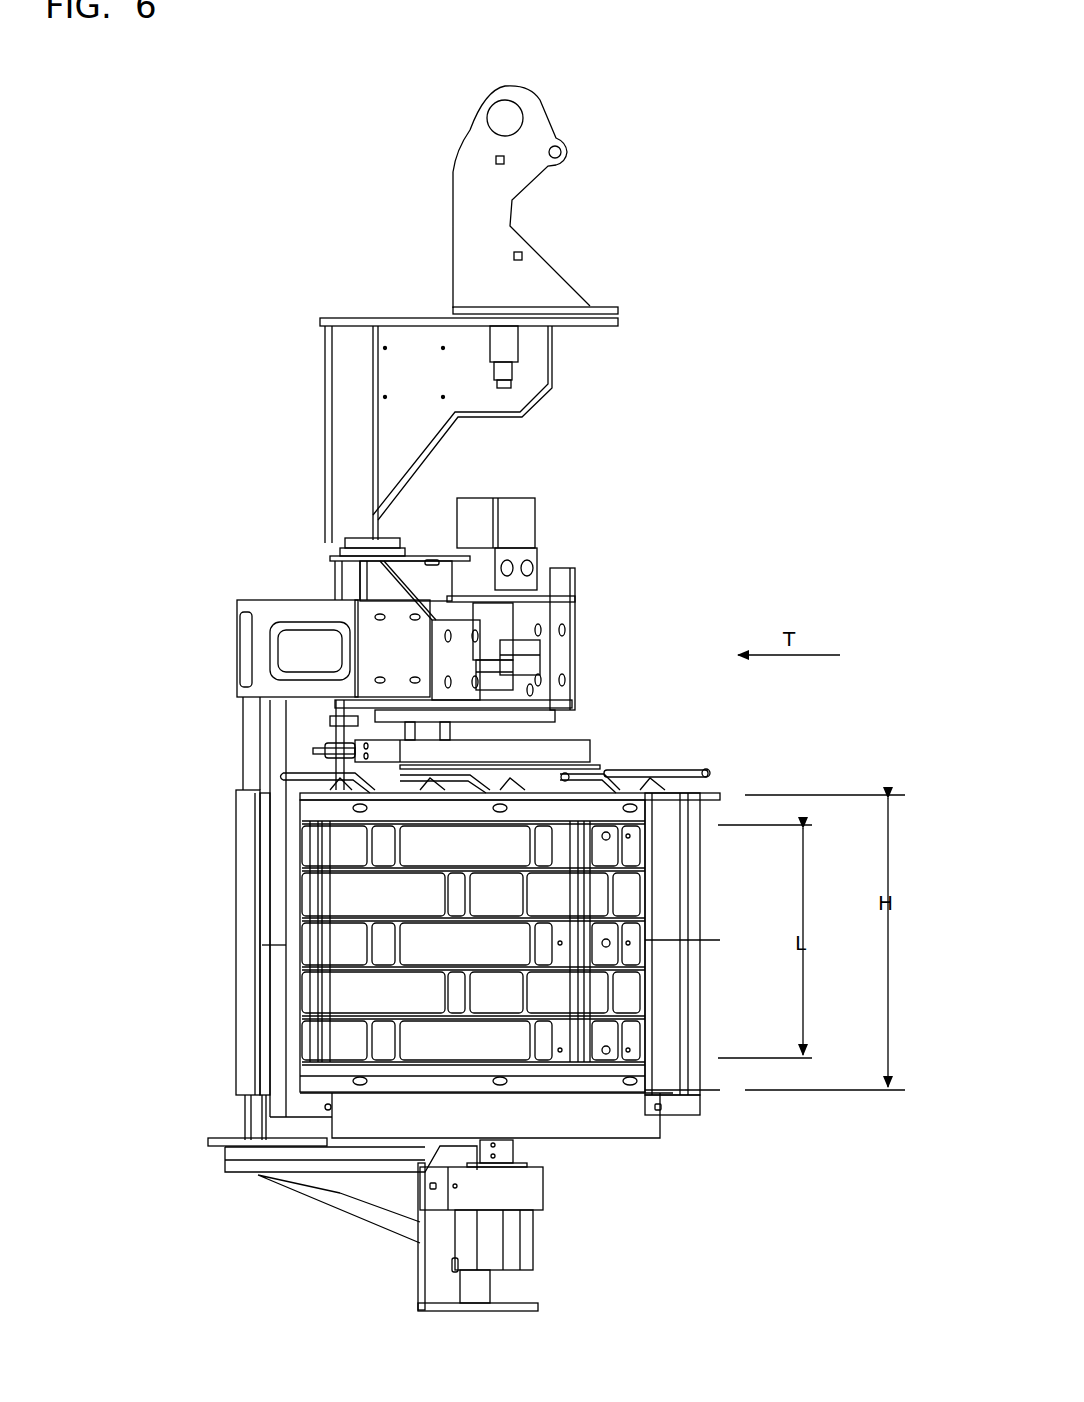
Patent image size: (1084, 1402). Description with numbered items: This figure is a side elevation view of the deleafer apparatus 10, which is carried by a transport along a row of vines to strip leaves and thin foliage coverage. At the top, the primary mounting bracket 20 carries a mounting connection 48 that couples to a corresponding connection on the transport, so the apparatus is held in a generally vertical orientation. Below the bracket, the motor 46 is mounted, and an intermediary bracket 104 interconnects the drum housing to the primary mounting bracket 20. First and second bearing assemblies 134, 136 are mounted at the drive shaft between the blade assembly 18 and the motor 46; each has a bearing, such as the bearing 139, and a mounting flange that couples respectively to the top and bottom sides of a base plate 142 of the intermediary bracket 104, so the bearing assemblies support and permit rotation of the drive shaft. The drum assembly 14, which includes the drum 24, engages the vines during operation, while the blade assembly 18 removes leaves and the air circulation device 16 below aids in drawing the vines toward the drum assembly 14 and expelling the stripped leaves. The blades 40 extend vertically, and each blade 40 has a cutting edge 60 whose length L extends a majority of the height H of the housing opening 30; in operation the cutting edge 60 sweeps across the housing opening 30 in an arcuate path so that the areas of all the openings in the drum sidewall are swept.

The deleafer apparatus 10 is at (781, 444).
The drum assembly 14 is at (746, 753).
The air circulation device 16 is at (556, 1158).
The blade assembly 18 is at (599, 1060).
The primary mounting bracket 20 is at (357, 318).
The drum 24 is at (510, 914).
The housing opening 30 is at (645, 841).
The blade 40 is at (600, 887).
The motor 46 is at (518, 515).
The mounting connection 48 is at (535, 138).
The cutting edge 60 is at (592, 902).
The intermediary bracket 104 is at (553, 612).
The first bearing assembly 134 is at (537, 678).
The second bearing assembly 136 is at (557, 720).
The bearing 139 is at (490, 727).
The base plate 142 is at (570, 705).